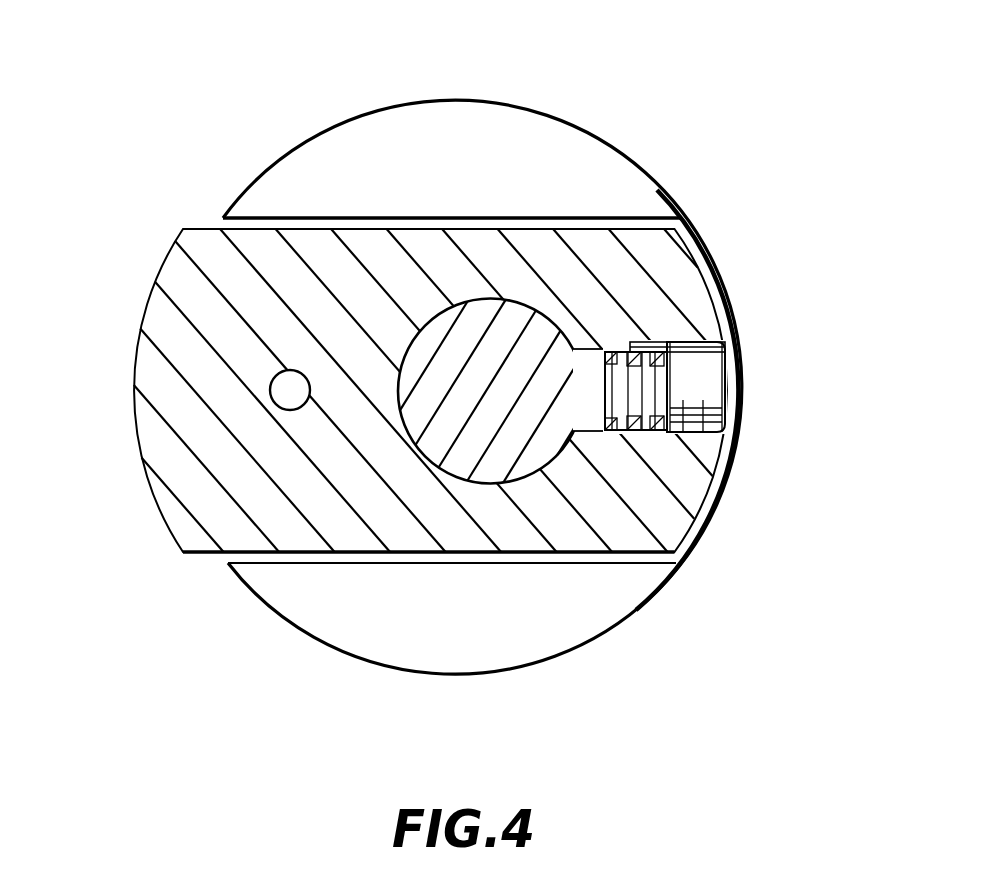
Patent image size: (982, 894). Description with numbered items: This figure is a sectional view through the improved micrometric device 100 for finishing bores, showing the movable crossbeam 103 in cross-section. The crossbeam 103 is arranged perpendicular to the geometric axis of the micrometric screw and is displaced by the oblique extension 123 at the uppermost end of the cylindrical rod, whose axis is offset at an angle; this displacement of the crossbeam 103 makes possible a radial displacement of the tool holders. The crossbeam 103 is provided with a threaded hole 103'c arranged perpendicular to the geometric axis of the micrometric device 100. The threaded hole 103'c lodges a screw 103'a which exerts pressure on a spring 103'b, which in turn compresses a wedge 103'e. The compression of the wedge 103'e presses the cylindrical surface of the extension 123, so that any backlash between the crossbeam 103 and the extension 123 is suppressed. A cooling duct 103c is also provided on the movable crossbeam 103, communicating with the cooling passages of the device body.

The micrometric device 100 is at (522, 78).
The movable crossbeam 103 is at (439, 377).
The cooling duct 103c is at (292, 391).
The oblique extension 123 is at (483, 475).
The screw 103'a is at (709, 387).
The spring 103'b is at (709, 403).
The threaded hole 103'c is at (716, 318).
The wedge 103'e is at (680, 429).